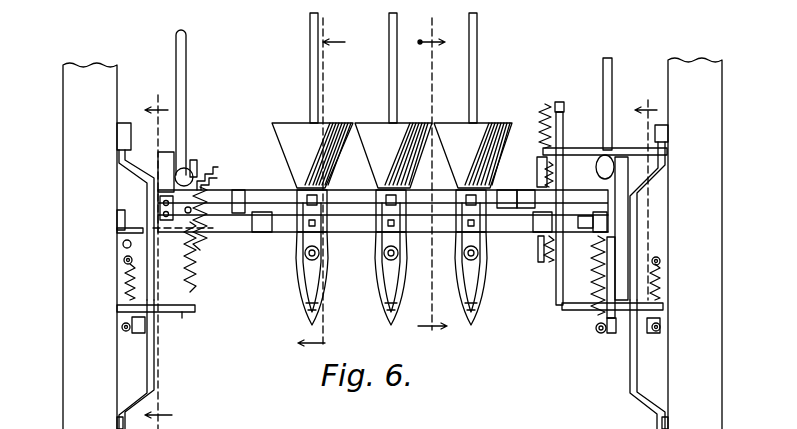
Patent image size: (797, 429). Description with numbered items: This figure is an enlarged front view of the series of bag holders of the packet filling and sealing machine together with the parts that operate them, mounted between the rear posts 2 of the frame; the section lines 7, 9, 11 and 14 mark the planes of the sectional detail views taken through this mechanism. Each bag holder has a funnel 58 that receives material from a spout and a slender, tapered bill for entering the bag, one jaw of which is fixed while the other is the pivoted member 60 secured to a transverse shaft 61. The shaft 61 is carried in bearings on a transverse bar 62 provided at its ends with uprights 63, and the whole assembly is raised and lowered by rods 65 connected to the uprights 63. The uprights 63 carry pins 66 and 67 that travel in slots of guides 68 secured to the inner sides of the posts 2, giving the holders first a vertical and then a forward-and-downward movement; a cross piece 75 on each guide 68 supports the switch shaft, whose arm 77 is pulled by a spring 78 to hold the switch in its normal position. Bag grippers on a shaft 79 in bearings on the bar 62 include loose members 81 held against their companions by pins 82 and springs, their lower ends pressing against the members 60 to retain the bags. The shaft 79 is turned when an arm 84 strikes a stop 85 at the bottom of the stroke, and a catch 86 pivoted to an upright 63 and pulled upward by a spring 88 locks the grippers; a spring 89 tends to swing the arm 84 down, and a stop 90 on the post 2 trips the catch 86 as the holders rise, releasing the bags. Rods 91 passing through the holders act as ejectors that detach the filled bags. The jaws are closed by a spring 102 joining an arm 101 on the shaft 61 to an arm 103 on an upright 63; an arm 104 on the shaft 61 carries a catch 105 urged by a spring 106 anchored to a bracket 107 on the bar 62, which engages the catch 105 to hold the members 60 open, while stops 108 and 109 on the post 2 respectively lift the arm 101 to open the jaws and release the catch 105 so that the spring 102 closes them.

The rear post 2 is at (707, 335).
The section line 7— 7 is at (158, 254).
The section line 9— 9 is at (646, 193).
The section line 11— 11 is at (315, 189).
The section line 14— 14 is at (432, 188).
The funnel 58 is at (293, 120).
The pivoted member of bag entering portion 60 is at (328, 270).
The transverse shaft 61 is at (298, 240).
The transverse bar 62 is at (243, 232).
The upright 63 is at (168, 153).
The rod 65 is at (186, 40).
The pin 66 is at (145, 205).
The pin 67 is at (127, 288).
The guide 68 is at (155, 380).
The cross piece 75 is at (133, 333).
The arm 77 is at (124, 328).
The spring 78 is at (124, 260).
The shaft 79 is at (262, 195).
The gripper member 81 is at (323, 200).
The pin 82 is at (305, 262).
The arm 84 is at (214, 167).
The stop 85 is at (120, 243).
The catch 86 is at (190, 297).
The spring 88 is at (200, 270).
The spring 89 is at (205, 243).
The stop 90 is at (185, 325).
The rod 91 is at (310, 48).
The arm 101 is at (590, 213).
The spring 102 is at (596, 333).
The arm 103 is at (612, 335).
The arm 104 is at (565, 147).
The catch 105 is at (558, 102).
The spring 106 is at (541, 118).
The bracket 107 is at (540, 182).
The stop 108 is at (590, 312).
The stop 109 is at (596, 163).